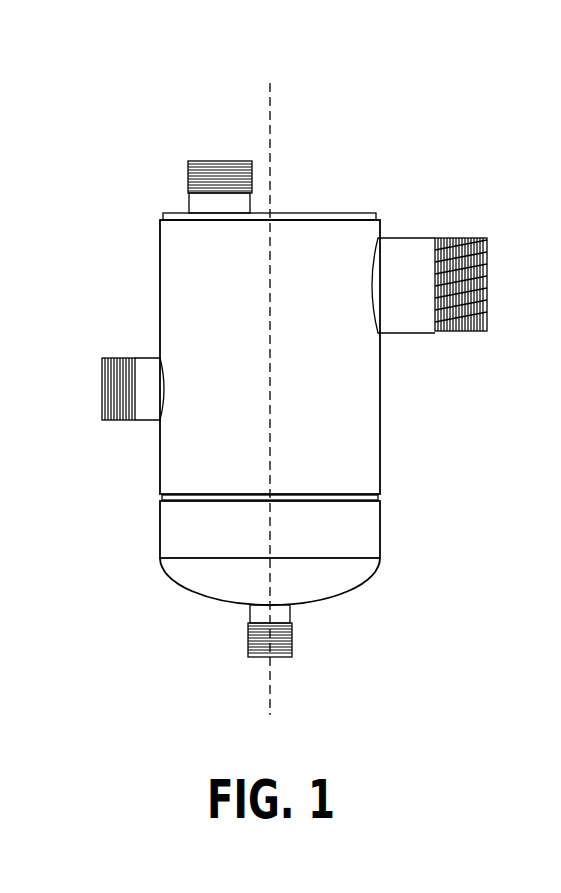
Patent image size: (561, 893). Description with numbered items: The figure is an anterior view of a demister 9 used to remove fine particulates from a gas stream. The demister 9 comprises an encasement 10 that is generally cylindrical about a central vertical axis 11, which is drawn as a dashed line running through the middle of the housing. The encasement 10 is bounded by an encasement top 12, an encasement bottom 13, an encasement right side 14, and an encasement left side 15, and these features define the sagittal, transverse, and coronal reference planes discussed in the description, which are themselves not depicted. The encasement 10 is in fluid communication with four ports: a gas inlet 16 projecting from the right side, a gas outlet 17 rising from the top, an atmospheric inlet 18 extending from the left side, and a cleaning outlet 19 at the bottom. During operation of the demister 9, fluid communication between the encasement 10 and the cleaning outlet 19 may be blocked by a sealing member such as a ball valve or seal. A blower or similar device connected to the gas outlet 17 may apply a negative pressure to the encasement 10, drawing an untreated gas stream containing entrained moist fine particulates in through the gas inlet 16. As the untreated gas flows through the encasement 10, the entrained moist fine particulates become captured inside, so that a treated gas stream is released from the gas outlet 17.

The demister 9 is at (127, 305).
The encasement 10 is at (158, 247).
The central vertical axis 11 is at (271, 125).
The encasement top 12 is at (341, 212).
The encasement bottom 13 is at (317, 605).
The encasement right side 14 is at (382, 442).
The encasement left side 15 is at (158, 450).
The gas inlet 16 is at (488, 283).
The gas outlet 17 is at (212, 160).
The atmospheric inlet 18 is at (102, 392).
The cleaning outlet 19 is at (275, 658).